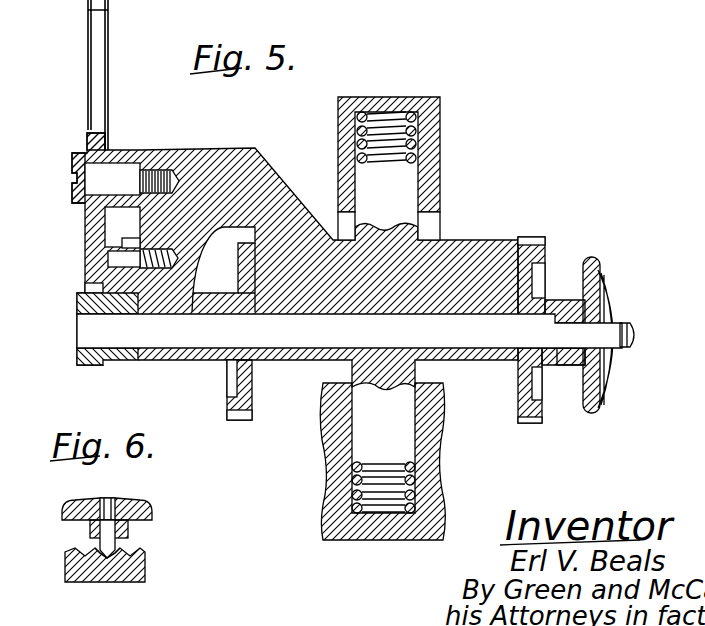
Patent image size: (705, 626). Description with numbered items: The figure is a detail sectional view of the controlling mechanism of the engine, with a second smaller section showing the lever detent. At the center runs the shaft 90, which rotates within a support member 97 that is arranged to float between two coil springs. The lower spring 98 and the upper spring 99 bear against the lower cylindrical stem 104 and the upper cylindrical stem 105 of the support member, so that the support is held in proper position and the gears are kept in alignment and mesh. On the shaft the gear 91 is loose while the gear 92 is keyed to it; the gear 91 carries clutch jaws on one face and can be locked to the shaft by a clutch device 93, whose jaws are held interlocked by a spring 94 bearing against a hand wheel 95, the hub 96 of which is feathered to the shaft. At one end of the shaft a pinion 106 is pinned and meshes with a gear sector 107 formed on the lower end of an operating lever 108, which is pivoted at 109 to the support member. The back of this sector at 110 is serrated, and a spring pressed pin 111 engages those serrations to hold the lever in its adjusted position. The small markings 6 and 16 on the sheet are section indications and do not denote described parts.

In FIG. 5, the shaft 90 is at (306, 335).
In FIG. 5, the gear 91 is at (545, 252).
In FIG. 5, the gear 92 is at (233, 394).
In FIG. 5, the clutch device 93 is at (560, 302).
In FIG. 5, the spring 94 is at (607, 298).
In FIG. 5, the hand wheel 95 is at (591, 412).
In FIG. 5, the hub 96 is at (568, 365).
In FIG. 5, the support member 97 is at (478, 243).
In FIG. 6, the support member 97 is at (72, 510).
In FIG. 5, the lower coil spring 98 is at (353, 498).
In FIG. 5, the upper coil spring 99 is at (408, 136).
In FIG. 5, the lower cylindrical stem 104 is at (404, 428).
In FIG. 5, the upper cylindrical stem 105 is at (407, 193).
In FIG. 5, the pinion 106 is at (99, 366).
In FIG. 5, the gear sector 107 is at (86, 210).
In FIG. 6, the gear sector 107 is at (110, 578).
In FIG. 5, the operating lever 108 is at (88, 73).
In FIG. 5, the pivot 109 is at (120, 176).
In FIG. 5, the serrated back of sector 110 is at (106, 244).
In FIG. 6, the serrated back of sector 110 is at (127, 556).
In FIG. 5, the spring pressed pin 111 is at (130, 240).
In FIG. 6, the spring pressed pin 111 is at (110, 548).
In FIG. 5, the passage 6 is at (160, 248).
In FIG. 5, the port 16 is at (77, 257).